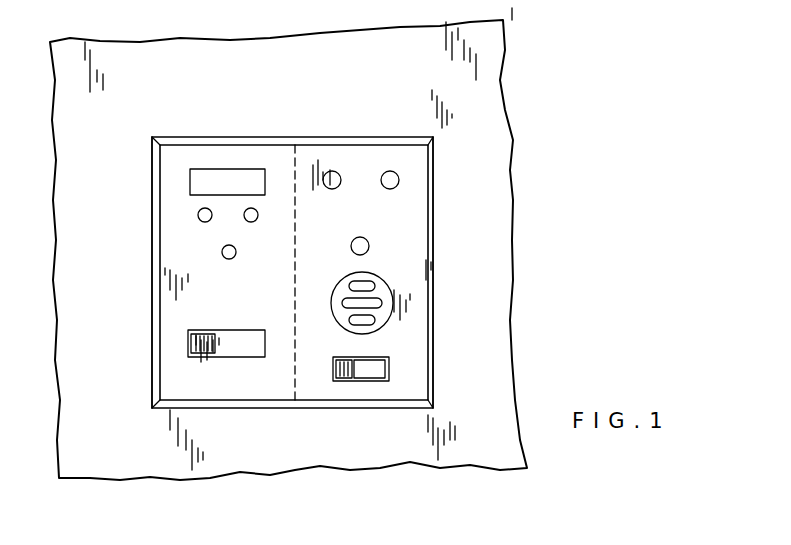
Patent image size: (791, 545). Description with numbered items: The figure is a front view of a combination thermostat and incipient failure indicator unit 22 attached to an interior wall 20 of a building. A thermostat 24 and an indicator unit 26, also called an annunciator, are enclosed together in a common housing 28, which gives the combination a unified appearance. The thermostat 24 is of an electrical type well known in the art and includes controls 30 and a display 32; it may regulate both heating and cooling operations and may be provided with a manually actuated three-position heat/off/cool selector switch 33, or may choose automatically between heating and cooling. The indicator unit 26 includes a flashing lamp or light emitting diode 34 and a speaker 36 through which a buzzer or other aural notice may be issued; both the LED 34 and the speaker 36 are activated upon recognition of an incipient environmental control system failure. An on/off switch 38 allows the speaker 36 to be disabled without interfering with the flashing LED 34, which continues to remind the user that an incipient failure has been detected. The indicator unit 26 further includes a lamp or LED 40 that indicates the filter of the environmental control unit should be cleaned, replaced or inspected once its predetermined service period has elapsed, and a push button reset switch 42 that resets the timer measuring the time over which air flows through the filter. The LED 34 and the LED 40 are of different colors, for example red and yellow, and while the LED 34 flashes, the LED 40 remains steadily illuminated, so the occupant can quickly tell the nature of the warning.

The interior wall 20 is at (480, 115).
The combination thermostat and incipient failure indicator unit 22 is at (462, 210).
The thermostat 24 is at (240, 373).
The indicator unit 26 is at (412, 371).
The common housing 28 is at (433, 279).
The controls 30 is at (212, 236).
The display 32 is at (195, 182).
The heat/off/cool selector switch 33 is at (190, 340).
The flashing LED 34 is at (369, 243).
The speaker 36 is at (388, 312).
The on/off switch 38 is at (357, 378).
The LED 40 is at (390, 171).
The push button reset switch 42 is at (332, 171).